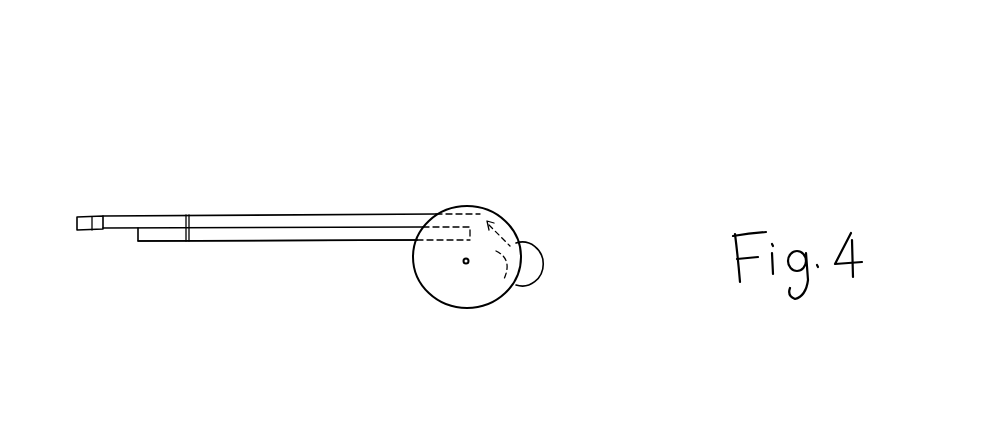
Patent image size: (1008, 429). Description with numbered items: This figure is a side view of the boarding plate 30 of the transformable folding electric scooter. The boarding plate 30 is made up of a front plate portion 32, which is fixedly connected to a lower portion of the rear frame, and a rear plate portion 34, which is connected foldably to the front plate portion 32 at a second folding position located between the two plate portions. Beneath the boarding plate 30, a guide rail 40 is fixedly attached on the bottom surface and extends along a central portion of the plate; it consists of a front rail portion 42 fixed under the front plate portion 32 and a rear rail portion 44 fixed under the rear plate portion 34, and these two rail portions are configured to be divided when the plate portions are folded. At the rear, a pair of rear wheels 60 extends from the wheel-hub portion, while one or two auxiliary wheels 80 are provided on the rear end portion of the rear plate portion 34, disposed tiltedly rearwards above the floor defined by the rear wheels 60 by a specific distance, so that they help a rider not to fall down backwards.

The boarding plate 30 is at (98, 137).
The front plate portion 32 is at (146, 216).
The rear plate portion 34 is at (306, 215).
The guide rail 40 is at (248, 242).
The front rail portion 42 is at (150, 234).
The rear rail portion 44 is at (207, 242).
The rear wheels 60 is at (457, 303).
The auxiliary wheels 80 is at (537, 247).